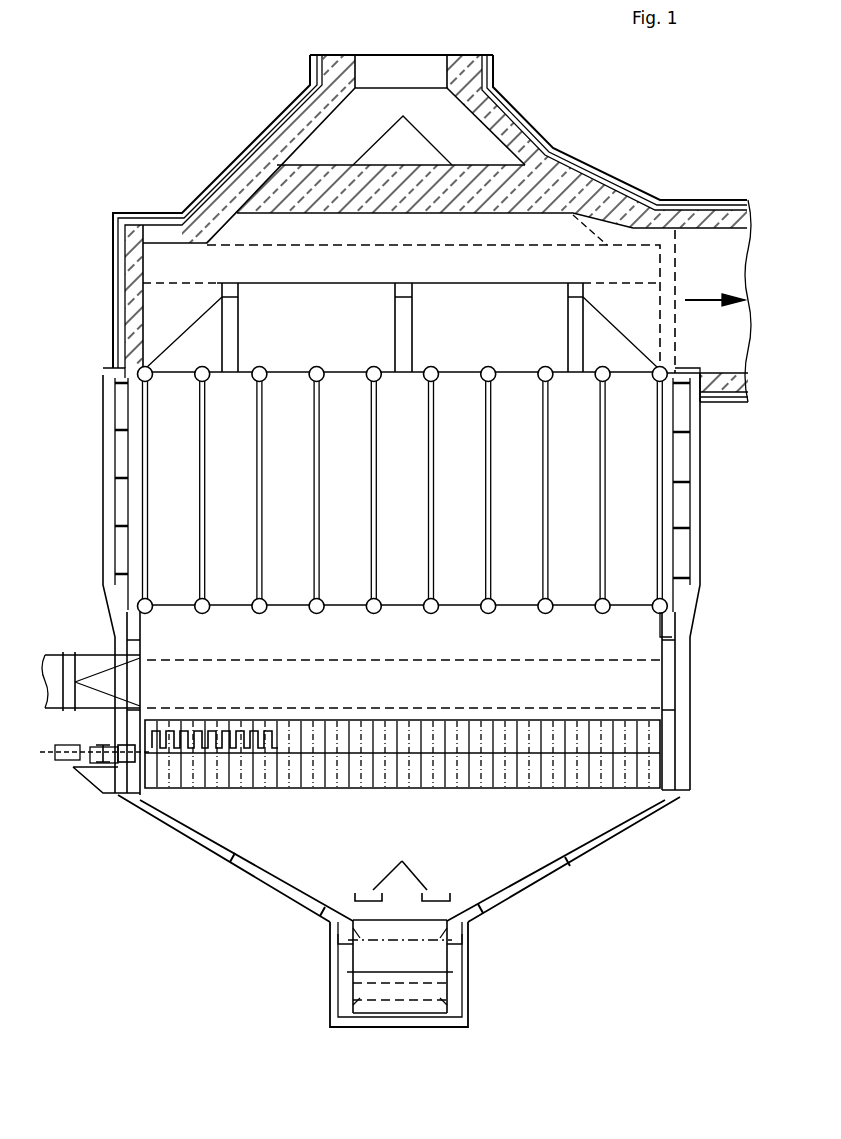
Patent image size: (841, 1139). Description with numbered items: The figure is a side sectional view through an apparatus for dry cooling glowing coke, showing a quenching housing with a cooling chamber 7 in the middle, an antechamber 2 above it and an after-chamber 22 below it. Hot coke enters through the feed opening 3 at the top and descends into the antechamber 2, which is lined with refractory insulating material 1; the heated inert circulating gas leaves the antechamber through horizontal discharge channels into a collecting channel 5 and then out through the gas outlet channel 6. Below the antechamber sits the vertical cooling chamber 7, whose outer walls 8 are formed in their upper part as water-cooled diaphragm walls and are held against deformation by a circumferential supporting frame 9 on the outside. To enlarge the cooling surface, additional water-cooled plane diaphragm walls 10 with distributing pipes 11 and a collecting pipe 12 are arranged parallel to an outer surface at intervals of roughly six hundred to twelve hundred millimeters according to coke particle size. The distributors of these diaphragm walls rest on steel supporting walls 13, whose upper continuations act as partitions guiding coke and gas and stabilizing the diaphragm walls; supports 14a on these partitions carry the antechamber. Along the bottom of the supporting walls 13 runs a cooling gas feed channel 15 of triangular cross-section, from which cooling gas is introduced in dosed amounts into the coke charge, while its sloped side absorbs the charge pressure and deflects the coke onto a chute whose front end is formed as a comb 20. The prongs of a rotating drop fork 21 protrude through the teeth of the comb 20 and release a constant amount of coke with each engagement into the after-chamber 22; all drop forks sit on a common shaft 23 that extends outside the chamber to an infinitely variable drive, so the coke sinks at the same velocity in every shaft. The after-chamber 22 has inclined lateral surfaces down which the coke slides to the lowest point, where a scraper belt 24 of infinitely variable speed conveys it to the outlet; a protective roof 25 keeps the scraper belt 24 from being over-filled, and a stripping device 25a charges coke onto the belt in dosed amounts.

The refractory insulating material 1 is at (302, 140).
The antechamber 2 is at (349, 140).
The feed opening 3 is at (423, 81).
The collecting channel 5 is at (636, 278).
The gas outlet channel 6 is at (719, 290).
The cooling chamber 7 is at (346, 500).
The outer walls 8 is at (140, 457).
The circumferential supporting frame 9 is at (122, 482).
The plane diaphragm walls 10 is at (203, 505).
The distributing pipes 11 is at (203, 613).
The collecting pipe 12 is at (204, 378).
The steel supporting walls 13 is at (391, 646).
The supports 14a is at (232, 329).
The cooling gas feed channel 15 is at (351, 686).
The comb 20 is at (200, 733).
The rotating drop fork 21 is at (253, 785).
The after-chamber 22 is at (366, 825).
The common shaft 23 is at (96, 744).
The scraper belt 24 is at (391, 968).
The protective roof 25 is at (420, 879).
The stripping device 25a is at (378, 880).